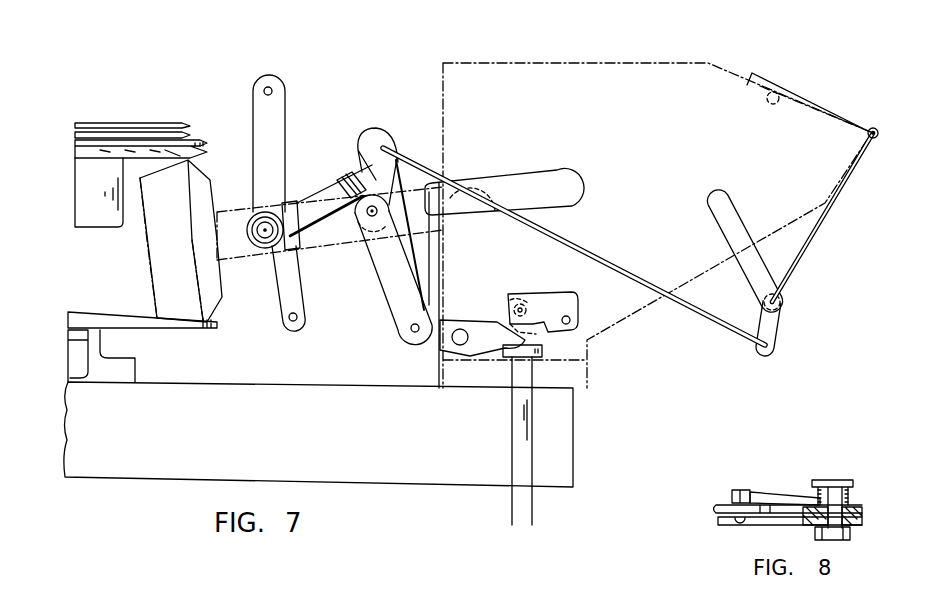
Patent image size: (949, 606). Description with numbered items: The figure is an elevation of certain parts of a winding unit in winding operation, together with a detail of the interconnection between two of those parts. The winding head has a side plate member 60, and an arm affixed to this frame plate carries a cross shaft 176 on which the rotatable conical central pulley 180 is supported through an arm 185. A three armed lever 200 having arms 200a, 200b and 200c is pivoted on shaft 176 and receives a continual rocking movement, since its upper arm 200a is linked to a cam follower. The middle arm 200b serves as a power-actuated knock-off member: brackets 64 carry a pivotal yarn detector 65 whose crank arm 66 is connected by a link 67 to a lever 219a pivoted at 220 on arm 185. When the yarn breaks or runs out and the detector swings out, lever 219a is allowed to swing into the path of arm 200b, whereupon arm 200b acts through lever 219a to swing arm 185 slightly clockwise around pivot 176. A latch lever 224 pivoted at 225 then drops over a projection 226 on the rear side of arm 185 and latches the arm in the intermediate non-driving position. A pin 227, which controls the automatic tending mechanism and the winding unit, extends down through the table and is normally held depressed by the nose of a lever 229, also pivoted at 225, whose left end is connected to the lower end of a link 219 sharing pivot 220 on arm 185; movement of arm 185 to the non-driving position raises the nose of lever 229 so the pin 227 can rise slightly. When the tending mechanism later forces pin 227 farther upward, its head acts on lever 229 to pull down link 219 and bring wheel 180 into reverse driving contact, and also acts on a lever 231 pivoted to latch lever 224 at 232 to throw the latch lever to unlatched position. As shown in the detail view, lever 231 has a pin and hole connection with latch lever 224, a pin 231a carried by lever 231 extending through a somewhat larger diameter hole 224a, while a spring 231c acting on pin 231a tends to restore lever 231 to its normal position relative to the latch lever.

In FIG. 7, the side plate member 60 is at (702, 280).
In FIG. 7, the bracket 64 is at (750, 258).
In FIG. 7, the yarn detector 65 is at (877, 155).
In FIG. 7, the crank arm 66 is at (776, 320).
In FIG. 7, the link 67 is at (691, 308).
In FIG. 7, the cross shaft 176 is at (265, 230).
In FIG. 7, the central pulley 180 is at (140, 318).
In FIG. 7, the arm 185 is at (343, 244).
In FIG. 7, the three armed lever 200 is at (308, 145).
In FIG. 7, the upper arm 200a is at (263, 124).
In FIG. 7, the middle arm 200b is at (318, 188).
In FIG. 7, the lower arm 200c is at (289, 296).
In FIG. 7, the link 219 is at (381, 285).
In FIG. 7, the lever 219a is at (442, 134).
In FIG. 7, the pivot 220 is at (380, 212).
In FIG. 7, the latch lever 224 is at (445, 312).
In FIG. 8, the latch lever 224 is at (713, 505).
In FIG. 7, the hole 224a is at (525, 298).
In FIG. 8, the hole 224a is at (770, 483).
In FIG. 7, the pivot 225 is at (458, 330).
In FIG. 7, the projection 226 is at (504, 278).
In FIG. 7, the pin 227 is at (512, 438).
In FIG. 7, the lever 229 is at (491, 344).
In FIG. 7, the lever 231 is at (580, 297).
In FIG. 8, the lever 231 is at (775, 527).
In FIG. 7, the pin 231a is at (550, 298).
In FIG. 8, the pin 231a is at (731, 502).
In FIG. 8, the spring 231c is at (758, 490).
In FIG. 7, the pivot 232 is at (570, 322).
In FIG. 8, the pivot 232 is at (862, 520).